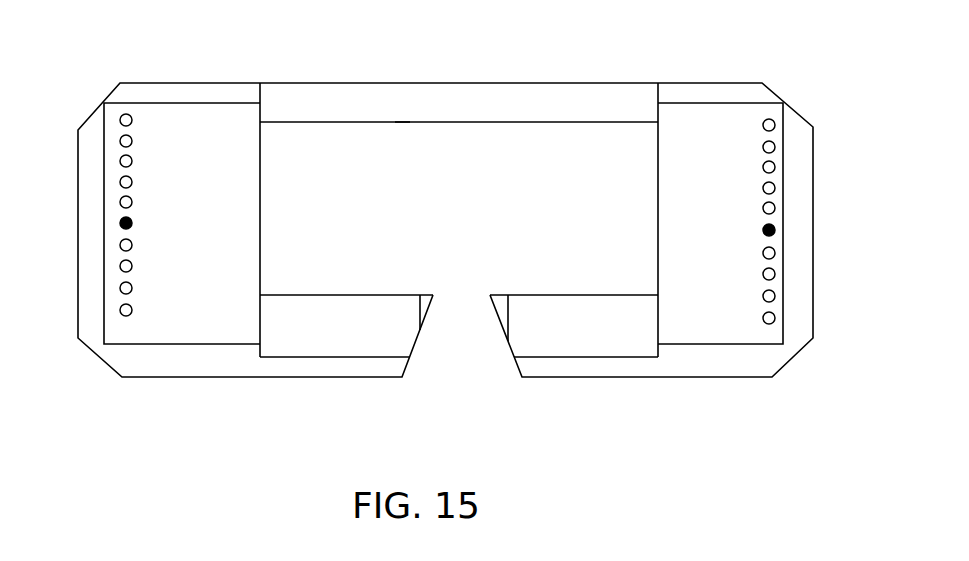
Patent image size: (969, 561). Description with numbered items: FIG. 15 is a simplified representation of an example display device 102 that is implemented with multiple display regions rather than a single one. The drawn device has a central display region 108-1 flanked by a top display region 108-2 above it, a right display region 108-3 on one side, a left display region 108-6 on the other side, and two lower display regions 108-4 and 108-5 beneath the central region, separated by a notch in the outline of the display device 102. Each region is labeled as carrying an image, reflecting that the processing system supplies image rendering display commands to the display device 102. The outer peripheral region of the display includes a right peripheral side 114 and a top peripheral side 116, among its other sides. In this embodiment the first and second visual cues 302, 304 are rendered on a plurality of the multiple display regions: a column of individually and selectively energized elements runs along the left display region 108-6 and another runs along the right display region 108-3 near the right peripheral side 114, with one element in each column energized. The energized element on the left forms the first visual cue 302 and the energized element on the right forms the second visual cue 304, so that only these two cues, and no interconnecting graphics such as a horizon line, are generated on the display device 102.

The display device 102 is at (713, 82).
The display region 108-1 is at (491, 172).
The display region 108-2 is at (588, 115).
The display region 108-3 is at (752, 171).
The display region 108-4 is at (608, 324).
The display region 108-5 is at (357, 324).
The display region 108-6 is at (212, 171).
The right peripheral side 114 is at (773, 336).
The top peripheral side 116 is at (402, 105).
The first visual cue 302 is at (117, 223).
The second visual cue 304 is at (777, 230).